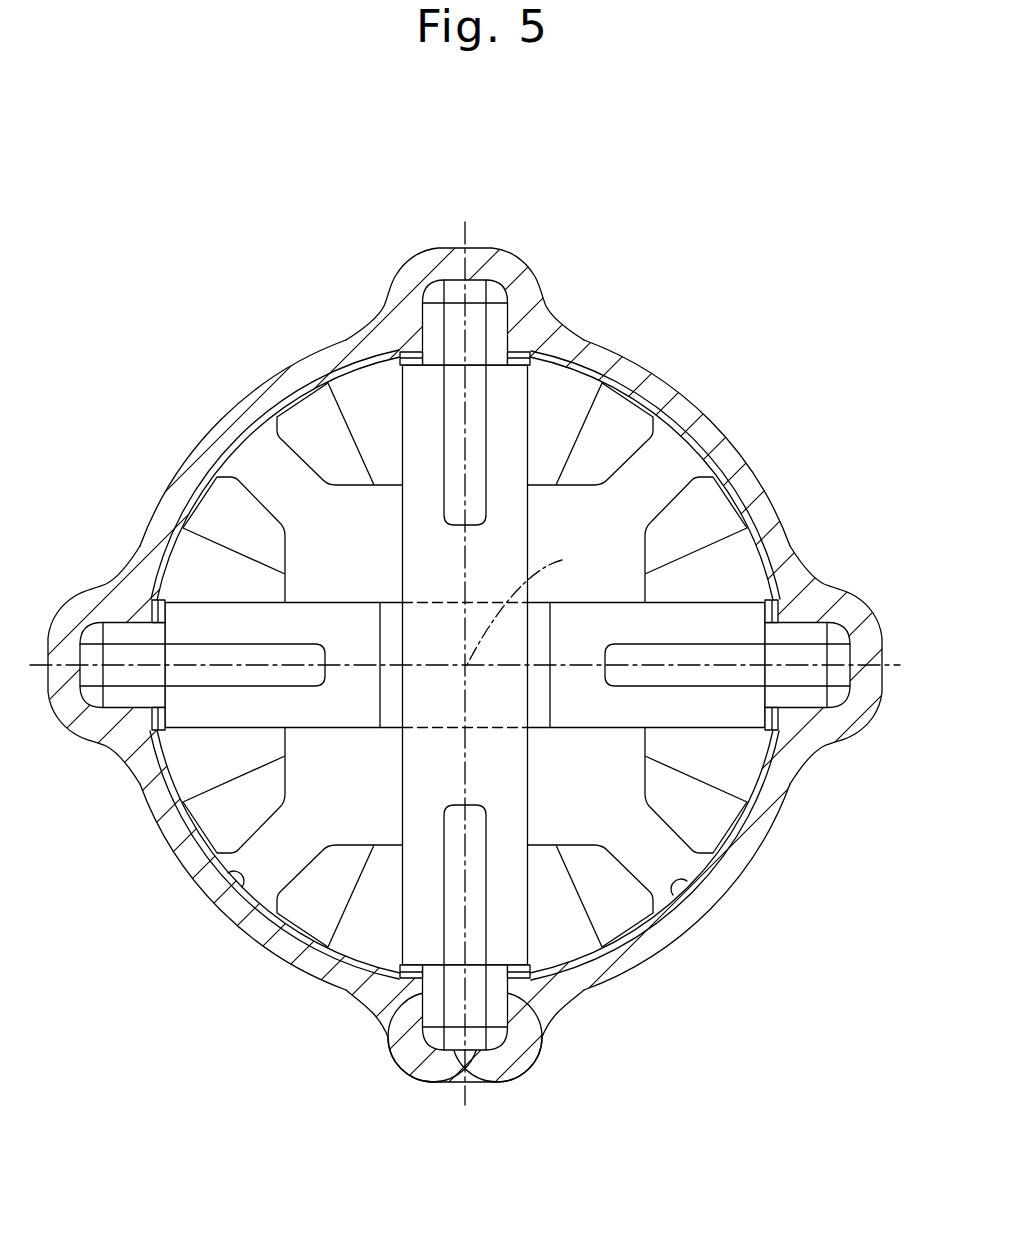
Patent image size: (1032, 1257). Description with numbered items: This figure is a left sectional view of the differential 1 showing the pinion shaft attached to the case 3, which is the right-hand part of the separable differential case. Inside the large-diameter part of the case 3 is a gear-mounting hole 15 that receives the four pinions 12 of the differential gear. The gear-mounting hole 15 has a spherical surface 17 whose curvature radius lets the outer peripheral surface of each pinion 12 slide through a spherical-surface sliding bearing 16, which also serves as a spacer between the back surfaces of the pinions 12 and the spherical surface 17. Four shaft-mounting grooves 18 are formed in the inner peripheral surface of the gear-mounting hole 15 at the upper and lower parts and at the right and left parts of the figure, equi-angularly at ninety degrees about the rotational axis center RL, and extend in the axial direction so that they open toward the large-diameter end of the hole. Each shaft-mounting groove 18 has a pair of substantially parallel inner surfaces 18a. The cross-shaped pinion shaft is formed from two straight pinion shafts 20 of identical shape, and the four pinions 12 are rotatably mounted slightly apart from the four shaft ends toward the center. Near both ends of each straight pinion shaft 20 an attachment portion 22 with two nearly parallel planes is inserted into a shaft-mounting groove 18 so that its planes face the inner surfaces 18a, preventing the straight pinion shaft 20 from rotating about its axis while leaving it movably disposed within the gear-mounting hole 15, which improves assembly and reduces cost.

The differential 1 is at (313, 254).
The case 3 is at (222, 420).
The pinion 12 is at (372, 935).
The gear-mounting hole 15 is at (240, 918).
The spherical-surface sliding bearing 16 is at (585, 988).
The spherical surface 17 is at (698, 892).
The shaft-mounting groove 18 is at (497, 1083).
The inner surface 18a is at (437, 1000).
The straight pinion shaft 20 is at (506, 405).
The attachment portion 22 is at (402, 1040).
The rotational axis center RL is at (535, 602).